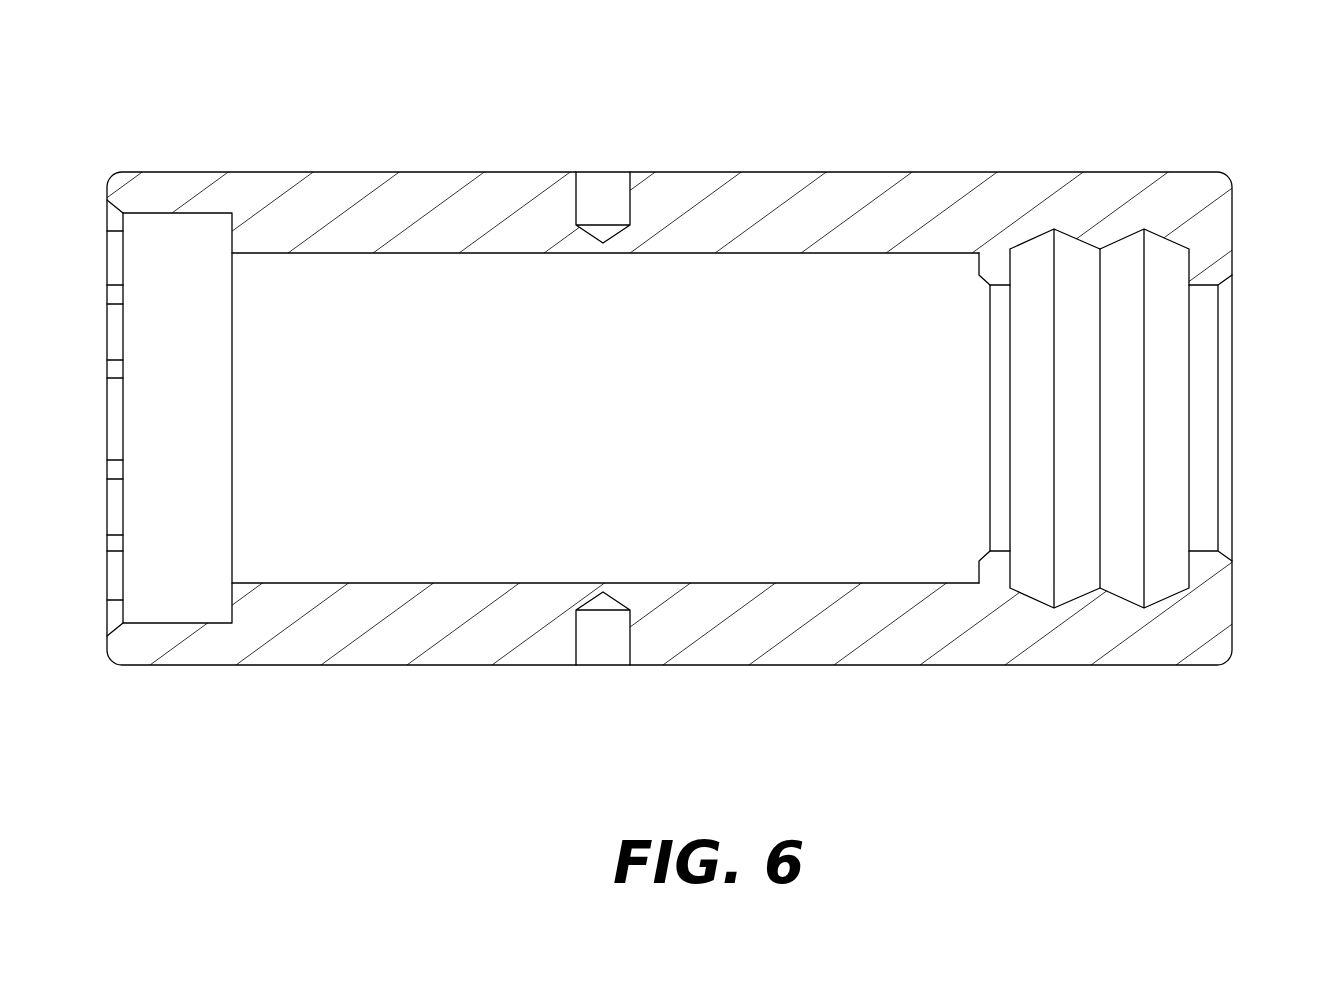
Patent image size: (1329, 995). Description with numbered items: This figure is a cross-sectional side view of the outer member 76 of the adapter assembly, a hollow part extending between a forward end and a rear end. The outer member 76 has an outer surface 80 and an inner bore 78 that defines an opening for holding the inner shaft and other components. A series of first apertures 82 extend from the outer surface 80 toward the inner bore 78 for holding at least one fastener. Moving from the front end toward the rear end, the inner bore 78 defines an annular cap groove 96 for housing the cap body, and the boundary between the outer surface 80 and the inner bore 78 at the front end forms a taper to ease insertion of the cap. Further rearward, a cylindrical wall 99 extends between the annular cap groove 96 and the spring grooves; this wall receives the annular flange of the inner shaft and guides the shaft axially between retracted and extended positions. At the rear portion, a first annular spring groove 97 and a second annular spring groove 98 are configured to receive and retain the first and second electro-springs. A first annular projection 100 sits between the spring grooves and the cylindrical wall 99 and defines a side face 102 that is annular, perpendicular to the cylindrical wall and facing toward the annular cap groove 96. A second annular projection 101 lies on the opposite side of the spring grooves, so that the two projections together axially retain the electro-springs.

The outer member 76 is at (1238, 97).
The outer surface 80 is at (298, 172).
The first apertures 82 is at (607, 172).
The annular cap groove 96 is at (145, 622).
The inner bore 78 is at (605, 418).
The cylindrical wall 99 is at (323, 583).
The first annular projection 100 is at (990, 553).
The side face 102 is at (977, 262).
The first annular spring groove 97 is at (1035, 594).
The second annular spring groove 98 is at (1165, 595).
The second annular projection 101 is at (1210, 568).